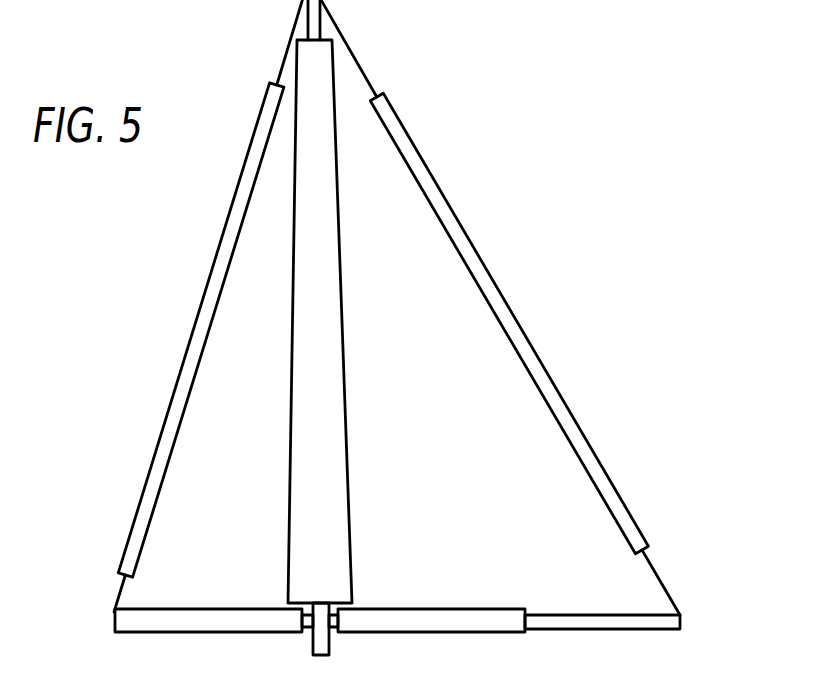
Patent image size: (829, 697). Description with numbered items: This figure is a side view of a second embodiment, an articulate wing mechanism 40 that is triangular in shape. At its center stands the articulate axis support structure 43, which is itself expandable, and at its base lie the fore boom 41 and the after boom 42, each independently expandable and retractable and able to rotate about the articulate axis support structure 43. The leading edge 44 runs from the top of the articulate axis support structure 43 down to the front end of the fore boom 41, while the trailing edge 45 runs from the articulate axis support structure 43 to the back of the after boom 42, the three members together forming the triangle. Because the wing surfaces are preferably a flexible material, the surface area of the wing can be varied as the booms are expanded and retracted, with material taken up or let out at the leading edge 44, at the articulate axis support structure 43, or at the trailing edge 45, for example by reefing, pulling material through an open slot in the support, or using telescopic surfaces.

The articulate wing mechanism 40 is at (462, 74).
The fore boom 41 is at (492, 623).
The after boom 42 is at (184, 627).
The articulate axis support structure 43 is at (328, 363).
The leading edge 44 is at (527, 338).
The trailing edge 45 is at (173, 383).